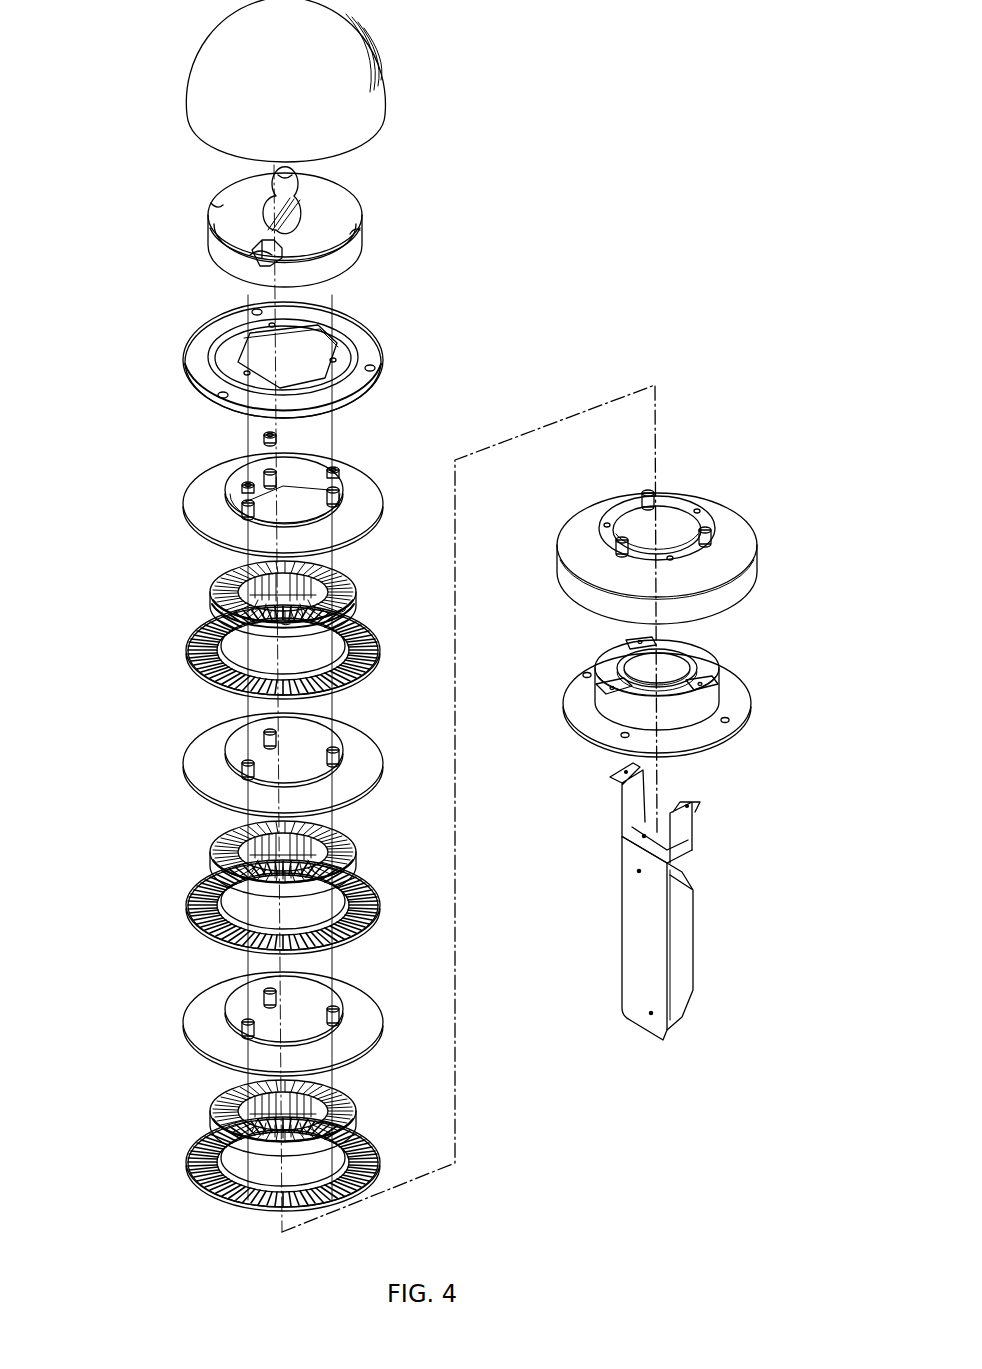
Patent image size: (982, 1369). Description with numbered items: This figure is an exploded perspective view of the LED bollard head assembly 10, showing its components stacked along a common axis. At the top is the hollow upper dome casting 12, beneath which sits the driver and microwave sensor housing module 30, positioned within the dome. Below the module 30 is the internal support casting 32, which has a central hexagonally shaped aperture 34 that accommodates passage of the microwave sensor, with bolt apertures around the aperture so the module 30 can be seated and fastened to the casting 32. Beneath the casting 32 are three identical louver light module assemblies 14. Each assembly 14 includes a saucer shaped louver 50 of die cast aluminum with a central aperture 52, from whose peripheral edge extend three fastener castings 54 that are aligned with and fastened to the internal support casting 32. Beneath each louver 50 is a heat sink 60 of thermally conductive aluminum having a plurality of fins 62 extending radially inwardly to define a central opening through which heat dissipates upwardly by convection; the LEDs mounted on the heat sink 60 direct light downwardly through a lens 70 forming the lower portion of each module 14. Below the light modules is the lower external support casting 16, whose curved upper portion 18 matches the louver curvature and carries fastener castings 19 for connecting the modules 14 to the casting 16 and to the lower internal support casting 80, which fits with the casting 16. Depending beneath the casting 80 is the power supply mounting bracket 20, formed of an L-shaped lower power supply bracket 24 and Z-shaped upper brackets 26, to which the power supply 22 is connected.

The LED bollard head assembly 10 is at (72, 1).
The upper dome casting 12 is at (398, 63).
The louver light module assembly 14 is at (167, 457).
The lower external support casting 16 is at (780, 527).
The upper portion 18 is at (718, 517).
The fastener castings 19 is at (640, 490).
The power supply mounting bracket 20 is at (576, 889).
The power supply 22 is at (690, 940).
The lower power supply bracket 24 is at (633, 963).
The upper bracket 26 is at (686, 832).
The driver and microwave sensor housing module 30 is at (372, 208).
The internal support casting 32 is at (370, 355).
The central hexagonally shaped aperture 34 is at (320, 375).
The saucer shaped louver 50 is at (368, 500).
The central aperture 52 is at (298, 517).
The fastener castings 54 is at (232, 486).
The heat sink 60 is at (365, 579).
The fins 62 is at (226, 578).
The lens 70 is at (366, 662).
The lower internal support casting 80 is at (735, 688).